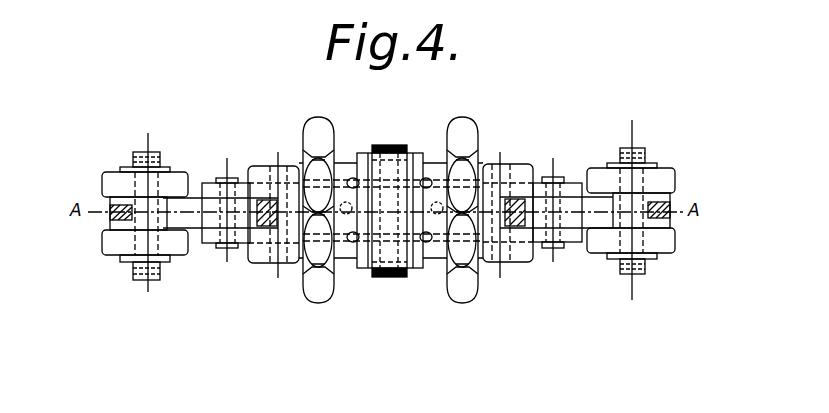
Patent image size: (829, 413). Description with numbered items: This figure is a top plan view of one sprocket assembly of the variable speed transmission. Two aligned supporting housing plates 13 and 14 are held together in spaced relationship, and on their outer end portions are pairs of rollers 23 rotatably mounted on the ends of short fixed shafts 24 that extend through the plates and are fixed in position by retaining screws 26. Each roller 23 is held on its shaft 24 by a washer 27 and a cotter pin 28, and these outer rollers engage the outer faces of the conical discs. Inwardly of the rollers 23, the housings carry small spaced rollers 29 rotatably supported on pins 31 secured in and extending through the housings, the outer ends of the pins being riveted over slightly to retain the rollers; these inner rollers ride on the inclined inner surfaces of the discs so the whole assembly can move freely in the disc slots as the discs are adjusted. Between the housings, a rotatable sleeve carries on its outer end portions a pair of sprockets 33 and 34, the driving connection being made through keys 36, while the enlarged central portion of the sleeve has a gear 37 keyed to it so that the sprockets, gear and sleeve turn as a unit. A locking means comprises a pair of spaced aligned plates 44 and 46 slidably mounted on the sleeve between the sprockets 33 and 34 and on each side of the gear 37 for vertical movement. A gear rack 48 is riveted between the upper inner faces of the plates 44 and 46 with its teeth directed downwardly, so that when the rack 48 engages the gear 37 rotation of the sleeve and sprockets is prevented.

The housing plate 13 is at (190, 203).
The housing plate 14 is at (588, 218).
The rollers 23 is at (108, 245).
The short fixed shaft 24 is at (140, 280).
The retaining screw 26 is at (108, 222).
The washer 27 is at (125, 262).
The cotter pin 28 is at (160, 277).
The small roller 29 is at (248, 182).
The pin 31 is at (226, 176).
The sprocket 33 is at (316, 292).
The sprocket 34 is at (467, 292).
The key 36 is at (343, 203).
The gear 37 is at (397, 278).
The plate 44 is at (360, 268).
The plate 46 is at (423, 268).
The gear rack 48 is at (387, 262).